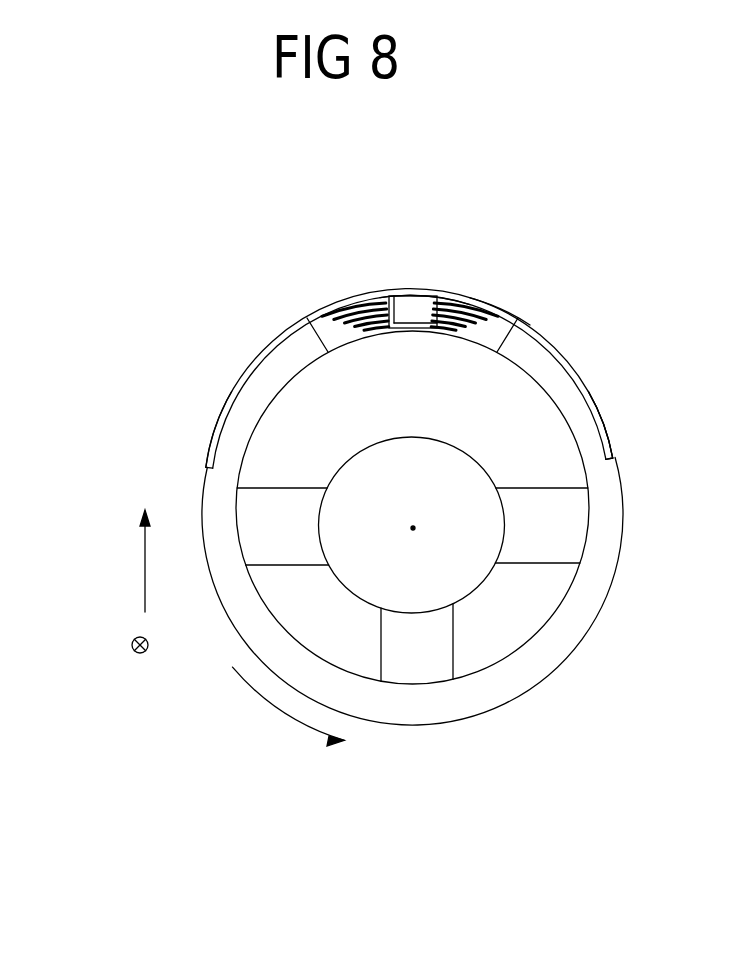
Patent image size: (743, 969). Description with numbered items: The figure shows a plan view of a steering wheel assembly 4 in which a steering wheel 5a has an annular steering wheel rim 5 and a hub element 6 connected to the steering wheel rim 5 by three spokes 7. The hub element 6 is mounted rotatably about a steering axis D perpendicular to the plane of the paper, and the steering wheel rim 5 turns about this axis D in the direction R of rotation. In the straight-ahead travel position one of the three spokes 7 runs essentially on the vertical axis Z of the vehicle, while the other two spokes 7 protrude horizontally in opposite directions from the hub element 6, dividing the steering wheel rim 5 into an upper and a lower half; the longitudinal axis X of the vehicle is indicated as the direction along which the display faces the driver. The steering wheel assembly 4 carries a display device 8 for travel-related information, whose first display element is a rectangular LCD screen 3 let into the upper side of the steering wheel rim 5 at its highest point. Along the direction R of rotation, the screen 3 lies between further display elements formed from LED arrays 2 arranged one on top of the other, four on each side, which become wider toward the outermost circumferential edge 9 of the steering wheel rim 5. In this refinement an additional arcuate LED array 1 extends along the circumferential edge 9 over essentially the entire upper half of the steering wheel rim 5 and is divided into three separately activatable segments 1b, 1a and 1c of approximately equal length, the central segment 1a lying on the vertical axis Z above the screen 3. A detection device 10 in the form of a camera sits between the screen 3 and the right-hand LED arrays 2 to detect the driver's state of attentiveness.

The LED array 1 is at (377, 280).
The central segment 1a is at (438, 293).
The segment 1b is at (243, 382).
The segment 1c is at (582, 355).
The LED arrays 2 is at (378, 331).
The screen 3 is at (408, 318).
The steering wheel assembly 4 is at (180, 431).
The steering wheel rim 5 is at (586, 608).
The steering wheel 5a is at (625, 446).
The hub element 6 is at (362, 587).
The spokes 7 is at (300, 507).
The display device 8 is at (528, 284).
The circumferential edge 9 is at (596, 392).
The detection device 10 is at (458, 290).
The steering axis D is at (413, 528).
The vertical axis Z is at (130, 561).
The longitudinal axis X is at (157, 647).
The direction of rotation R is at (289, 712).